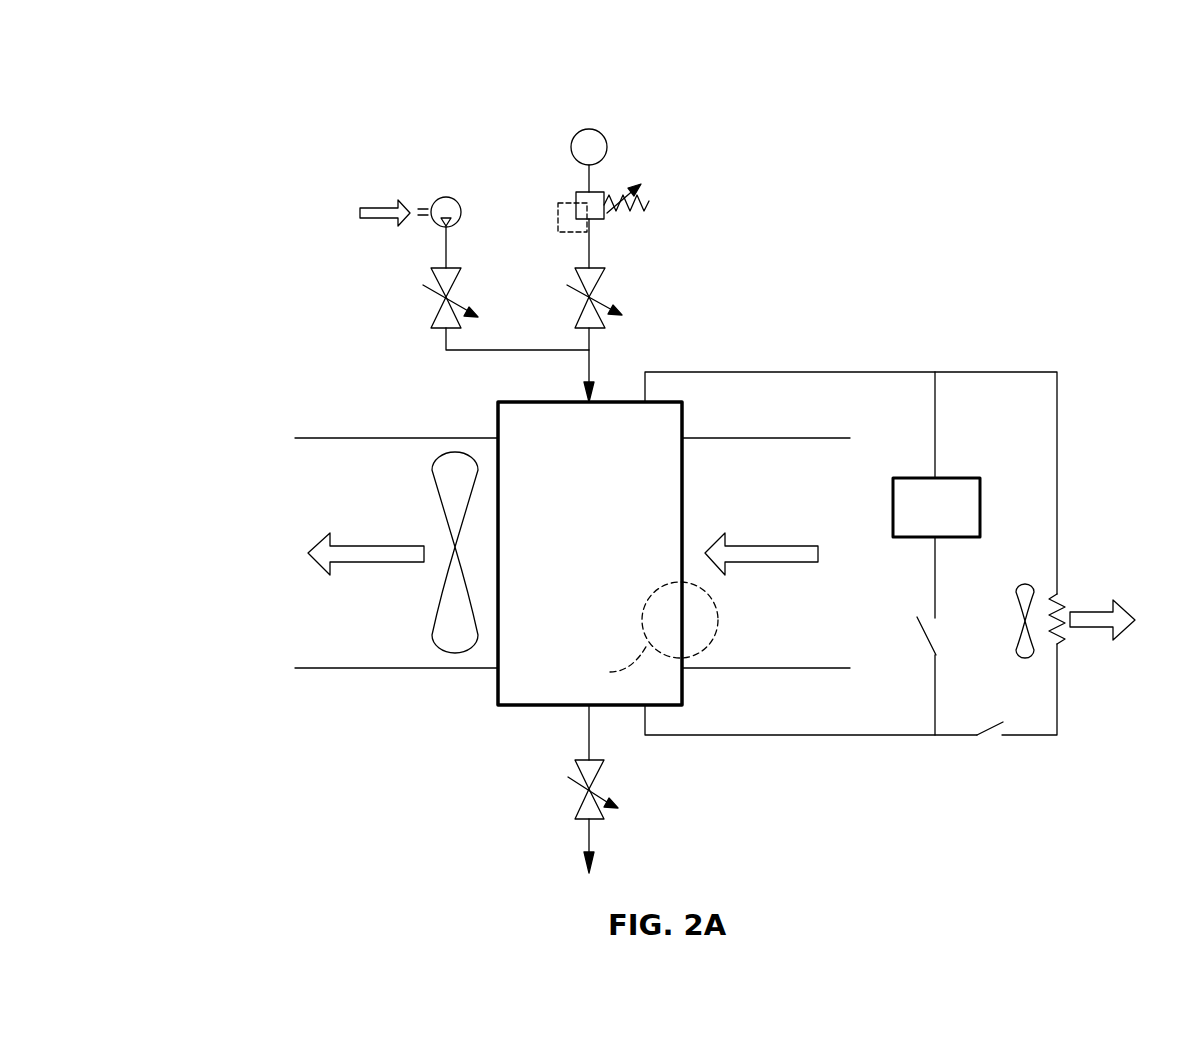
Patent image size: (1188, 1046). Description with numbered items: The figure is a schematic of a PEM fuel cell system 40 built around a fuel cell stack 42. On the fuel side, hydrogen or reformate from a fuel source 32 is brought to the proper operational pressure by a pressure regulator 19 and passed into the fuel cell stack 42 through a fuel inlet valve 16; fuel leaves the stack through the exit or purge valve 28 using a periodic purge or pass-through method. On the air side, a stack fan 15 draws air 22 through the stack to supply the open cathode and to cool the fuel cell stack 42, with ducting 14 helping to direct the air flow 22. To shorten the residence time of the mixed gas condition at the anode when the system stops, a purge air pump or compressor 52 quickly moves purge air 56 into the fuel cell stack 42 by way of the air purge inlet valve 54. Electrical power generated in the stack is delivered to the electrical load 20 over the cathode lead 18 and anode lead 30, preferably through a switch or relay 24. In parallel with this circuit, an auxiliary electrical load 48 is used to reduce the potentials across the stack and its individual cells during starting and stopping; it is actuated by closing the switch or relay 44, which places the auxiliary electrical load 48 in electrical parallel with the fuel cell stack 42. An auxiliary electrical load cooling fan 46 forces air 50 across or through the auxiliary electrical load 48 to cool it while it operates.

The PEM fuel cell system 40 is at (246, 96).
The fuel source 32 is at (607, 143).
The pressure regulator 19 is at (594, 212).
The fuel inlet valve 16 is at (600, 280).
The purge air 56 is at (385, 203).
The purge air pump or compressor 52 is at (446, 197).
The air purge inlet valve 54 is at (458, 280).
The fuel cell stack 42 is at (528, 402).
The ducting 14 is at (400, 438).
The stack fan 15 is at (437, 620).
The air 22 is at (358, 546).
The cathode lead 18 is at (808, 372).
The electrical load 20 is at (893, 497).
The switch or relay 24 is at (923, 635).
The anode lead 30 is at (848, 735).
The switch or relay 44 is at (992, 738).
The auxiliary electrical load 48 is at (1060, 600).
The auxiliary electrical load cooling fan 46 is at (1015, 645).
The air 50 is at (1090, 628).
The exit or purge valve 28 is at (597, 823).